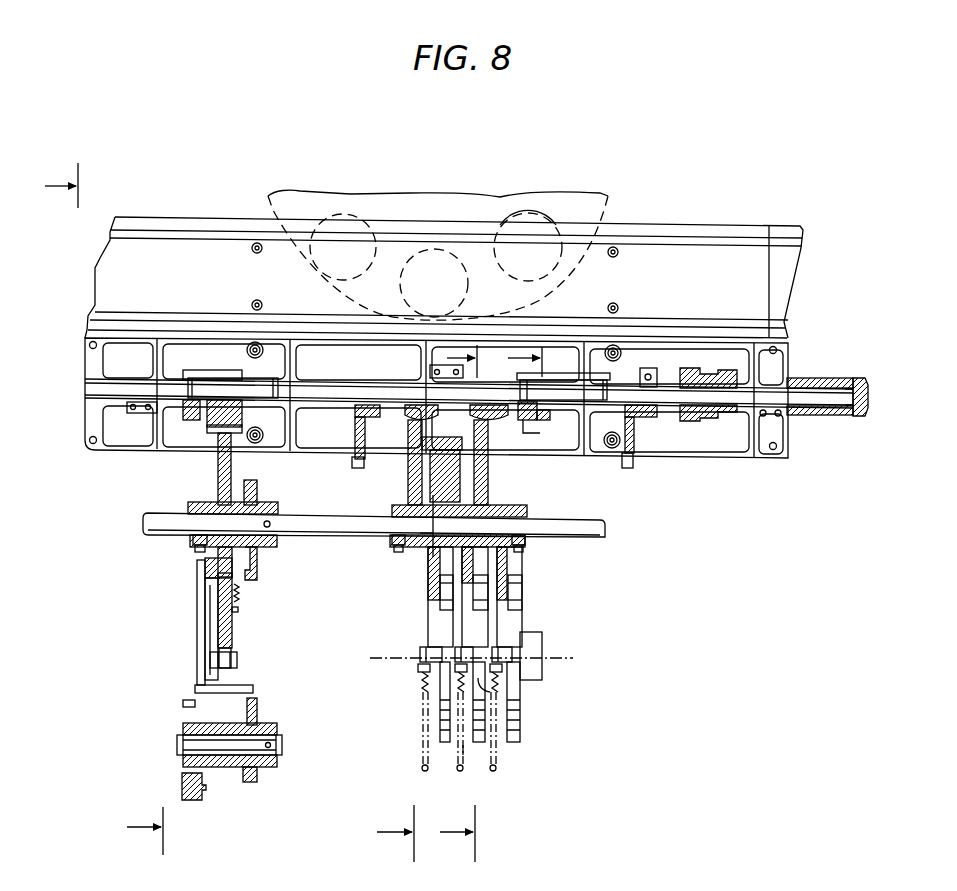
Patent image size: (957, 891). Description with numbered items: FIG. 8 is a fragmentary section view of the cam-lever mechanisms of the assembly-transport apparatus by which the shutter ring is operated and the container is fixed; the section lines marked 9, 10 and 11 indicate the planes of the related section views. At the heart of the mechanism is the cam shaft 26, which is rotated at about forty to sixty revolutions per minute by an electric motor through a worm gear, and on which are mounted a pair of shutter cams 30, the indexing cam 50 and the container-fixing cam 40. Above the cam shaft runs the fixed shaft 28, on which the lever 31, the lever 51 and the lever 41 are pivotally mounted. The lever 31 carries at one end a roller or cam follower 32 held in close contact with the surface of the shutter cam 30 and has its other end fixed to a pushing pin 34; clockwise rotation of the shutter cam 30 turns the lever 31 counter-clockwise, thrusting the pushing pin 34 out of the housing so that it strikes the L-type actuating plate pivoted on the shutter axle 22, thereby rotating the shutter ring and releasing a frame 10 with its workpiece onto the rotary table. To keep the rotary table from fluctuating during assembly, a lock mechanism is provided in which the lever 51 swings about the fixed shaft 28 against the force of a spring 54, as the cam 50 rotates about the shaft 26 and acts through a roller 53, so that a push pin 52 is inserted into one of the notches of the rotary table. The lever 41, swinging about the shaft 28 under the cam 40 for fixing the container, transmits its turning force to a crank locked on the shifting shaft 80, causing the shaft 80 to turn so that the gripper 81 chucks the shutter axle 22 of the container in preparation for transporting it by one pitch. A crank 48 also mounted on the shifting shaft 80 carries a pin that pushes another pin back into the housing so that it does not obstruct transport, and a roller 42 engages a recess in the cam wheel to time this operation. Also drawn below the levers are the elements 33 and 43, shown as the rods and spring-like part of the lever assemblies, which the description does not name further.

The section line 9- 9 is at (456, 605).
The frame 10 is at (457, 606).
The section line 11- 11 is at (102, 509).
The shutter axle 22 is at (627, 467).
The cam shaft 26 is at (558, 663).
The fixed shaft 28 is at (163, 532).
The shutter cam 30 is at (445, 743).
The lever 31 is at (503, 605).
The cam follower 32 is at (515, 650).
The rod 33 is at (495, 757).
The pushing pin 34 is at (495, 420).
The cam 40 is at (210, 622).
The lever 41 is at (230, 627).
The roller 42 is at (210, 660).
The spring 43 is at (240, 593).
The crank 48 is at (543, 376).
The cam 50 is at (478, 598).
The lever 51 is at (470, 562).
The push pin 52 is at (432, 450).
The roller 53 is at (480, 680).
The spring 54 is at (463, 755).
The shifting shaft 80 is at (667, 388).
The gripper 81 is at (652, 430).